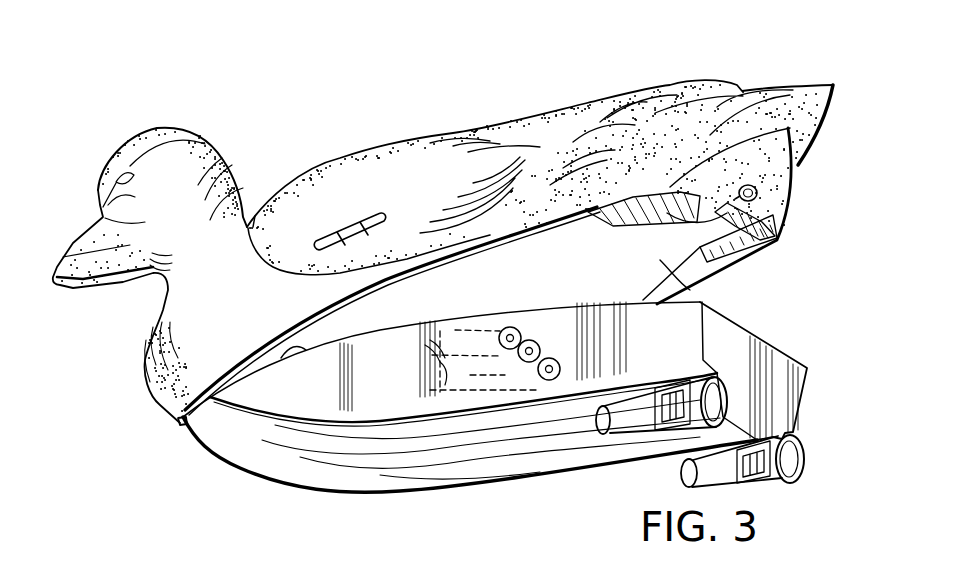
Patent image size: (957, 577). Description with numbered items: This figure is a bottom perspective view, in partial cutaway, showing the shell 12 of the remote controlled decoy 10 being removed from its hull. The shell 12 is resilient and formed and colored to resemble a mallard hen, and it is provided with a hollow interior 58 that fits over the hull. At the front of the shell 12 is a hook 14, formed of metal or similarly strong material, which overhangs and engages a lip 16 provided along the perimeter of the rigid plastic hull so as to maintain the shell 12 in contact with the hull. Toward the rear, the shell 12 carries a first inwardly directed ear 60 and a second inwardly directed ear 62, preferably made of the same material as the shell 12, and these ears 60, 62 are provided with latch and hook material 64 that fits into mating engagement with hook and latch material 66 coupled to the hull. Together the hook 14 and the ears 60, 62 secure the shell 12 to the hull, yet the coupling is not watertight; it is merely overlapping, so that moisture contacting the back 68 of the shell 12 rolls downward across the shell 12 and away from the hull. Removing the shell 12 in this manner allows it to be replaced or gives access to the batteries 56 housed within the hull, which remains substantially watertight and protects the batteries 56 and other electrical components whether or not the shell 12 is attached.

The remote controlled decoy 10 is at (368, 80).
The shell 12 is at (397, 140).
The back 68 is at (428, 135).
The first inwardly directed ear 60 is at (760, 203).
The second inwardly directed ear 62 is at (700, 203).
The latch and hook material 64 is at (757, 255).
The hollow interior 58 is at (730, 273).
The hook and latch material 66 is at (703, 287).
The hook 14 is at (181, 424).
The lip 16 is at (292, 350).
The batteries 56 is at (515, 375).